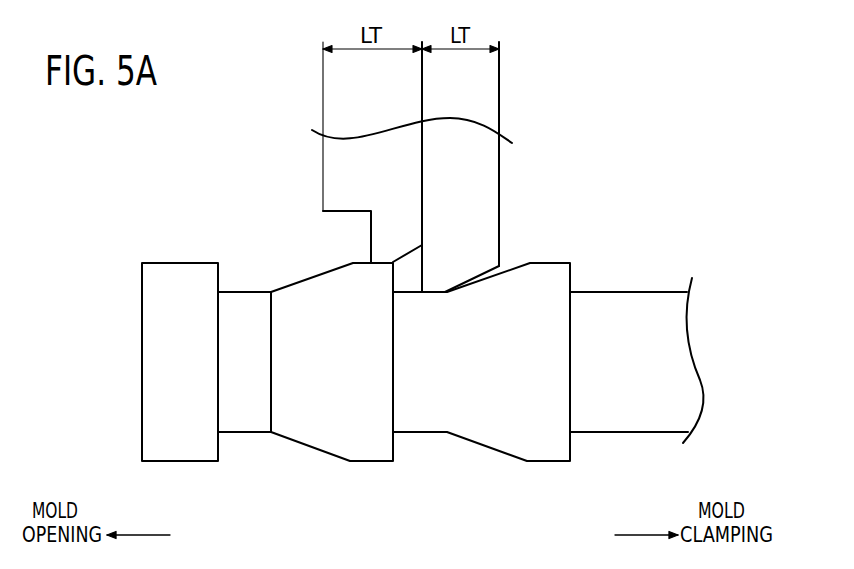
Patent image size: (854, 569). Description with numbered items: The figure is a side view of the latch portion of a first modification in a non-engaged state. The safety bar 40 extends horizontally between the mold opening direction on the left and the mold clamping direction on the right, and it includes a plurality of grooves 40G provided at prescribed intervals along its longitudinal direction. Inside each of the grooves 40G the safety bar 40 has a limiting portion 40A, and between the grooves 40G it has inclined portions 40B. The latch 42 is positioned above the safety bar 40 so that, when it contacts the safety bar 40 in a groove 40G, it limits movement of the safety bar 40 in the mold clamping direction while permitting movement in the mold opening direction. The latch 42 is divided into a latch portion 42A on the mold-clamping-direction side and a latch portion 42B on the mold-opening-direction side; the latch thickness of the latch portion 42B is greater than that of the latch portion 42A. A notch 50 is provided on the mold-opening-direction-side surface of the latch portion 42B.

The safety bar 40 is at (657, 413).
The limiting portion 40A is at (394, 278).
The inclined portion 40B is at (290, 285).
The groove 40G is at (237, 268).
The latch 42 is at (595, 137).
The latch portion on the mold-clamping-direction side 42A is at (480, 185).
The latch portion on the mold-opening-direction side 42B is at (368, 183).
The notch 50 is at (342, 238).